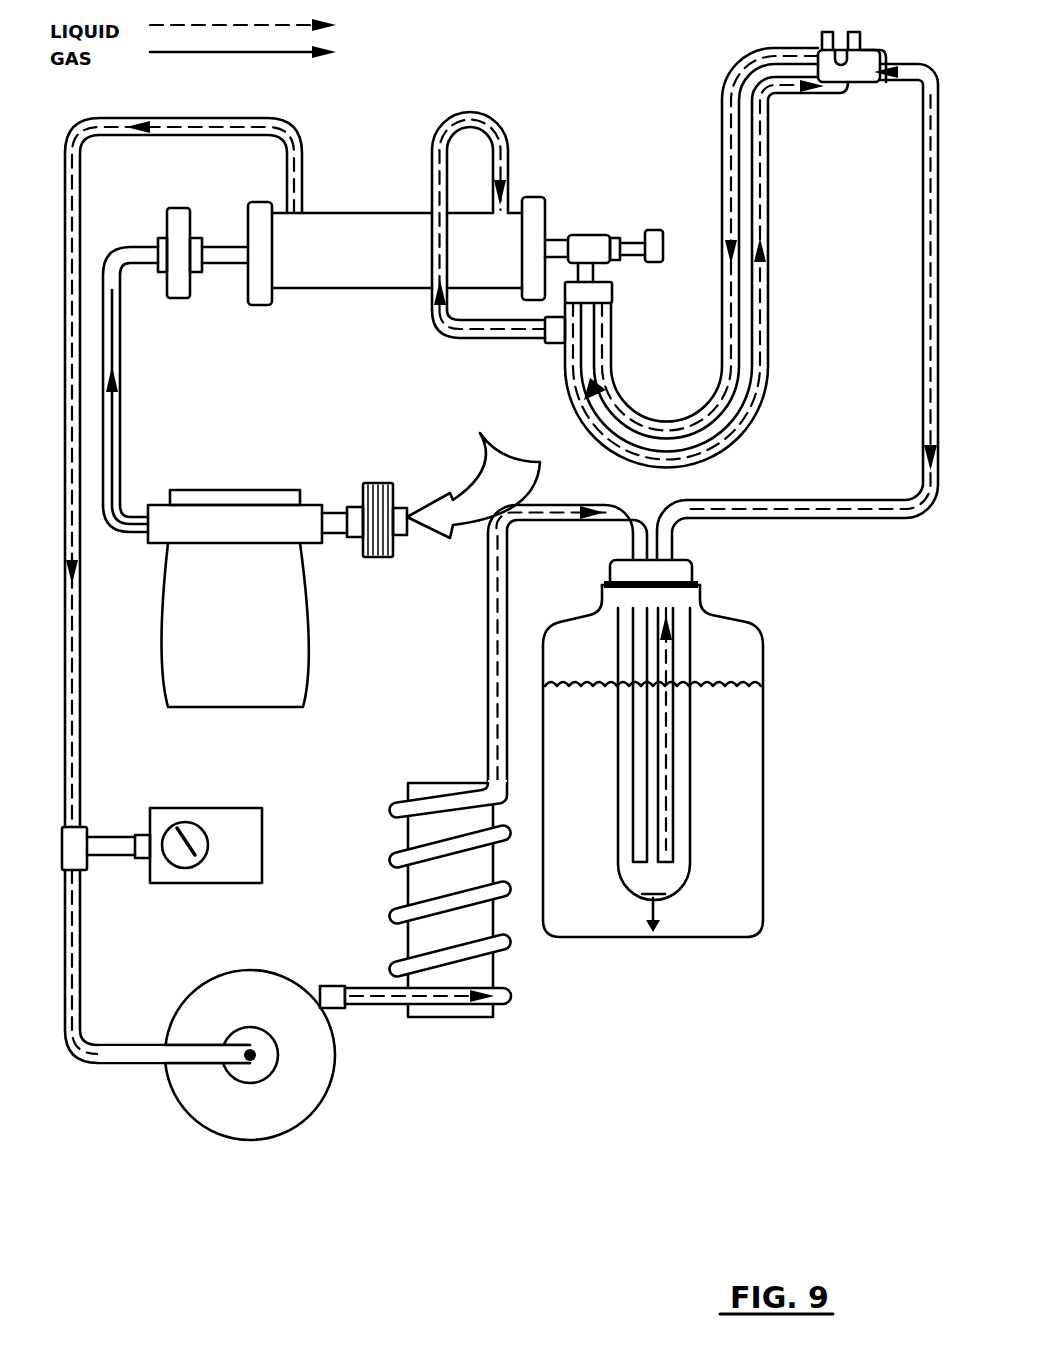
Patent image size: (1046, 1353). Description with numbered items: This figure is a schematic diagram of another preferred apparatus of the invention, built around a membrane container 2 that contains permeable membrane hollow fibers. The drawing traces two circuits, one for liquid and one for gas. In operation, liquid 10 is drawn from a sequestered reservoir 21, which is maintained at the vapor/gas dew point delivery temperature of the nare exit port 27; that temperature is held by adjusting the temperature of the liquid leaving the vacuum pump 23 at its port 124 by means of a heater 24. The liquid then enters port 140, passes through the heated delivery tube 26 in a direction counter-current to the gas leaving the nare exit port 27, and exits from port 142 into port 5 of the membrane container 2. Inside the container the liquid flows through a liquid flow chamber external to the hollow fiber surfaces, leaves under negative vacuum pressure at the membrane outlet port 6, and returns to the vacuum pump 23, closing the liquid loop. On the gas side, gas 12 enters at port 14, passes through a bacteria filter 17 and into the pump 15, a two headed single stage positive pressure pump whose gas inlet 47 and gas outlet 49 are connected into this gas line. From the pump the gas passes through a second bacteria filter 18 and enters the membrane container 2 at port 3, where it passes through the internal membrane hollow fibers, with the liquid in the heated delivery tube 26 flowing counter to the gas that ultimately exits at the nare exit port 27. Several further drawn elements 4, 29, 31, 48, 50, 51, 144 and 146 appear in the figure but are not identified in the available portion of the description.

The membrane container 2 is at (341, 272).
The port 3 is at (236, 253).
The T fitting 4 is at (556, 238).
The port 5 is at (495, 207).
The membrane outlet port 6 is at (293, 197).
The liquid 10 is at (737, 880).
The gas 12 is at (522, 466).
The port 14 is at (407, 530).
The pump 15 is at (188, 680).
The bacteria filter 17 is at (378, 483).
The bacteria filter 18 is at (172, 220).
The sequestered reservoir 21 is at (677, 880).
The vacuum pump 23 is at (197, 998).
The heater 24 is at (423, 793).
The heated delivery tube 26 is at (752, 330).
The nare exit port 27 is at (830, 30).
The valve 29 is at (612, 258).
The liquid level 31 is at (732, 710).
The gas inlet 47 is at (338, 523).
The liquid conduit 48 is at (667, 545).
The gas outlet 49 is at (140, 533).
The gas conduit 50 is at (633, 553).
The coupling fitting 51 is at (860, 45).
The vacuum pump port 124 is at (373, 987).
The port 140 is at (916, 84).
The port 142 is at (553, 337).
The pump inlet 144 is at (240, 1055).
The pressure gauge 146 is at (220, 822).